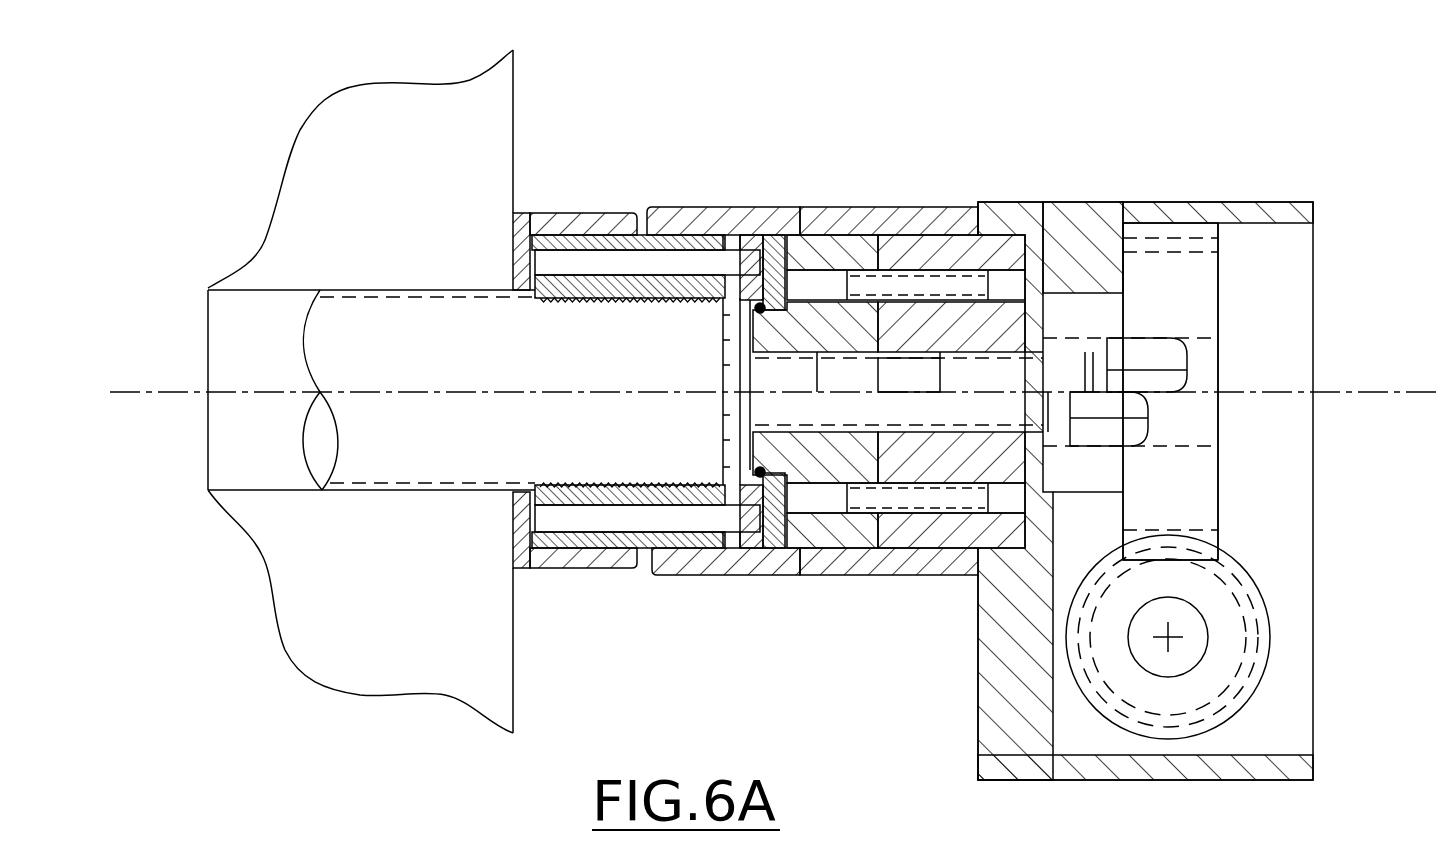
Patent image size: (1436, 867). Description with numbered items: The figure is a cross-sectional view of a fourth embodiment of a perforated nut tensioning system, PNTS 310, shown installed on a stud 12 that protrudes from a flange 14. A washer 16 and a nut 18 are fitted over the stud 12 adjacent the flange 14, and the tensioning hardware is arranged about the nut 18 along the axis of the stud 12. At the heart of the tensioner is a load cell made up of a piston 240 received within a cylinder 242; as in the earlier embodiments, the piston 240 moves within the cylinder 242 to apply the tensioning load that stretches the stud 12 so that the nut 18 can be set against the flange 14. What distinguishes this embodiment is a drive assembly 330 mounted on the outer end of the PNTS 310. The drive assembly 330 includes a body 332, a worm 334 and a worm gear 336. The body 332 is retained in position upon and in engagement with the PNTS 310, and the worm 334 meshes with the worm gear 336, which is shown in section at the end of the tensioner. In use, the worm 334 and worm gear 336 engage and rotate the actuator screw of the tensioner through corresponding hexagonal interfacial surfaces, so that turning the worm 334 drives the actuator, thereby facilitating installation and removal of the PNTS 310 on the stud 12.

The perforated nut tensioning system 310 is at (1108, 79).
The stud 12 is at (419, 365).
The flange 14 is at (398, 199).
The washer 16 is at (522, 213).
The nut 18 is at (666, 208).
The cylinder 242 is at (826, 207).
The piston 240 is at (802, 470).
The worm gear 336 is at (1197, 288).
The worm 334 is at (1245, 588).
The drive assembly 330 is at (1270, 683).
The body 332 is at (1218, 782).